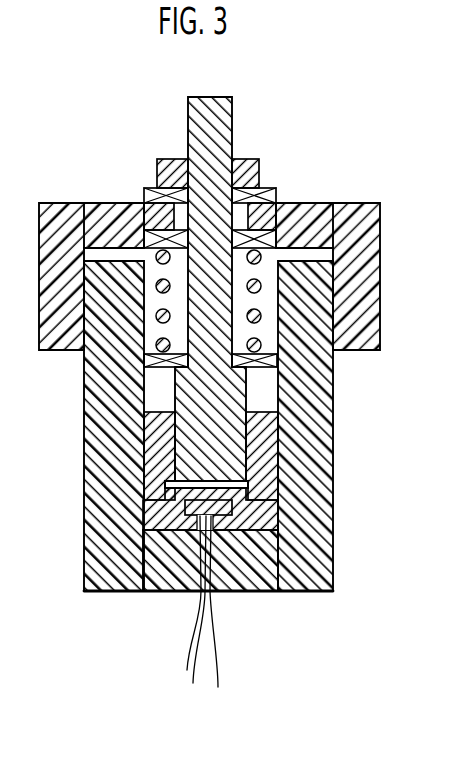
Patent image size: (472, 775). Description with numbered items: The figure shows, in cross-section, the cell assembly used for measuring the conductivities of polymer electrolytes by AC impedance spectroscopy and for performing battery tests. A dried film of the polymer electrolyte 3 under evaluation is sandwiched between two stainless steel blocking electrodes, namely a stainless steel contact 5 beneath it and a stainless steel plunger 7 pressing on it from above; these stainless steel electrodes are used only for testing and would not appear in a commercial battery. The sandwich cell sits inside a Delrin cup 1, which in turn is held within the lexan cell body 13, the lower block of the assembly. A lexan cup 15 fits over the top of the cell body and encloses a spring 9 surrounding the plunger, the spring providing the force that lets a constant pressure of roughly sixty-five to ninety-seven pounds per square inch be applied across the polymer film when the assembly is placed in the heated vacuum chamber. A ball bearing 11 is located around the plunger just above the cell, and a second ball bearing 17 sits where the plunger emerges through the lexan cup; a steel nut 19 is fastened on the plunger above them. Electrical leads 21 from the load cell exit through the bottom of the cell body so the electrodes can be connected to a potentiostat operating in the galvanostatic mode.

The Delrin cup 1 is at (272, 440).
The polymer electrolyte 3 is at (248, 482).
The stainless steel contact 5 is at (255, 500).
The stainless steel plunger 7 is at (250, 393).
The spring 9 is at (262, 316).
The ball bearing 11 is at (278, 360).
The lexan cell body 13 is at (334, 565).
The lexan cup 15 is at (381, 241).
The ball bearing 17 is at (277, 193).
The steel nut 19 is at (262, 164).
The electrical leads 21 is at (203, 624).